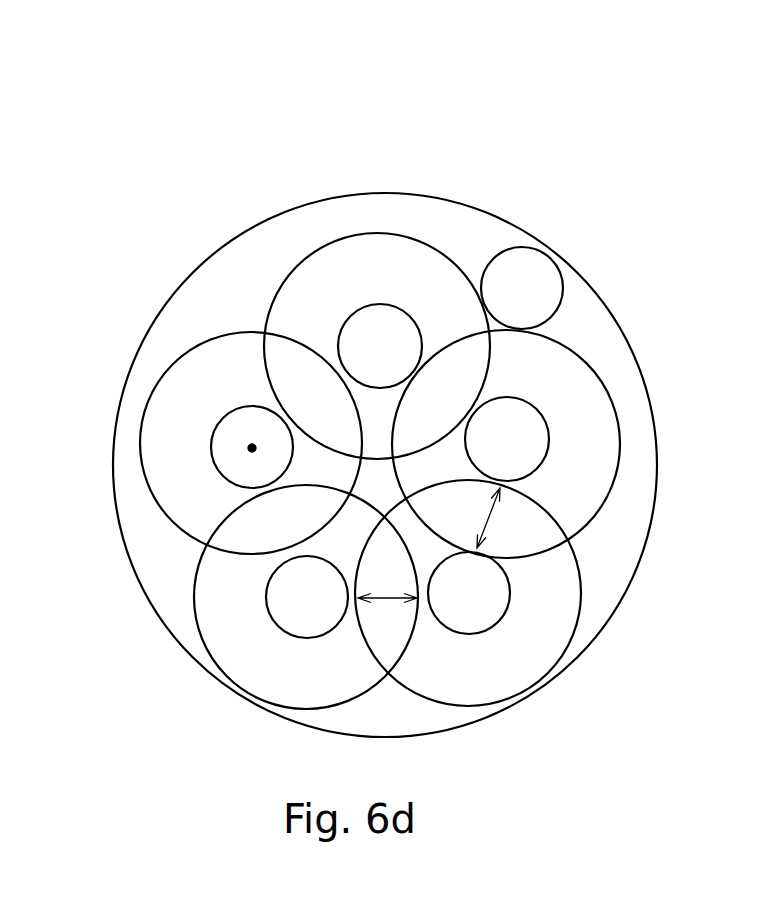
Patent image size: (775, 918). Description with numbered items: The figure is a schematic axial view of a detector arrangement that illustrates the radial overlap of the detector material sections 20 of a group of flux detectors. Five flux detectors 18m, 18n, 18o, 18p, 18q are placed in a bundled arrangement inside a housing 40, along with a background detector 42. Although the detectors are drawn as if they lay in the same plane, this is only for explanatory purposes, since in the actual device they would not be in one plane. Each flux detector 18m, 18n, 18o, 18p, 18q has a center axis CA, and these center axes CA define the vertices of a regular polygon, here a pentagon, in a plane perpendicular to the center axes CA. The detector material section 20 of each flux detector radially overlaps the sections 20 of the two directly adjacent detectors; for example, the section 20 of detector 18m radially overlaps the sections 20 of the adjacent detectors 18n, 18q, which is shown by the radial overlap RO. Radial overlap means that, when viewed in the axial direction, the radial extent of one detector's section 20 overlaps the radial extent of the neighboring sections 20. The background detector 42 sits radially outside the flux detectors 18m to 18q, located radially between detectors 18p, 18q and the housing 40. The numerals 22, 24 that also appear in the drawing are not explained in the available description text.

The housing 40 is at (423, 180).
The background detector 42 is at (579, 275).
The flux detector 18m is at (514, 641).
The flux detector 18n is at (183, 642).
The flux detector 18o is at (205, 443).
The flux detector 18p is at (286, 256).
The flux detector 18q is at (644, 404).
The detector material section 20 is at (553, 617).
The aperture 22 is at (531, 677).
The optical axis 24 is at (478, 612).
The center axis CA is at (252, 447).
The radial overlap RO is at (490, 520).